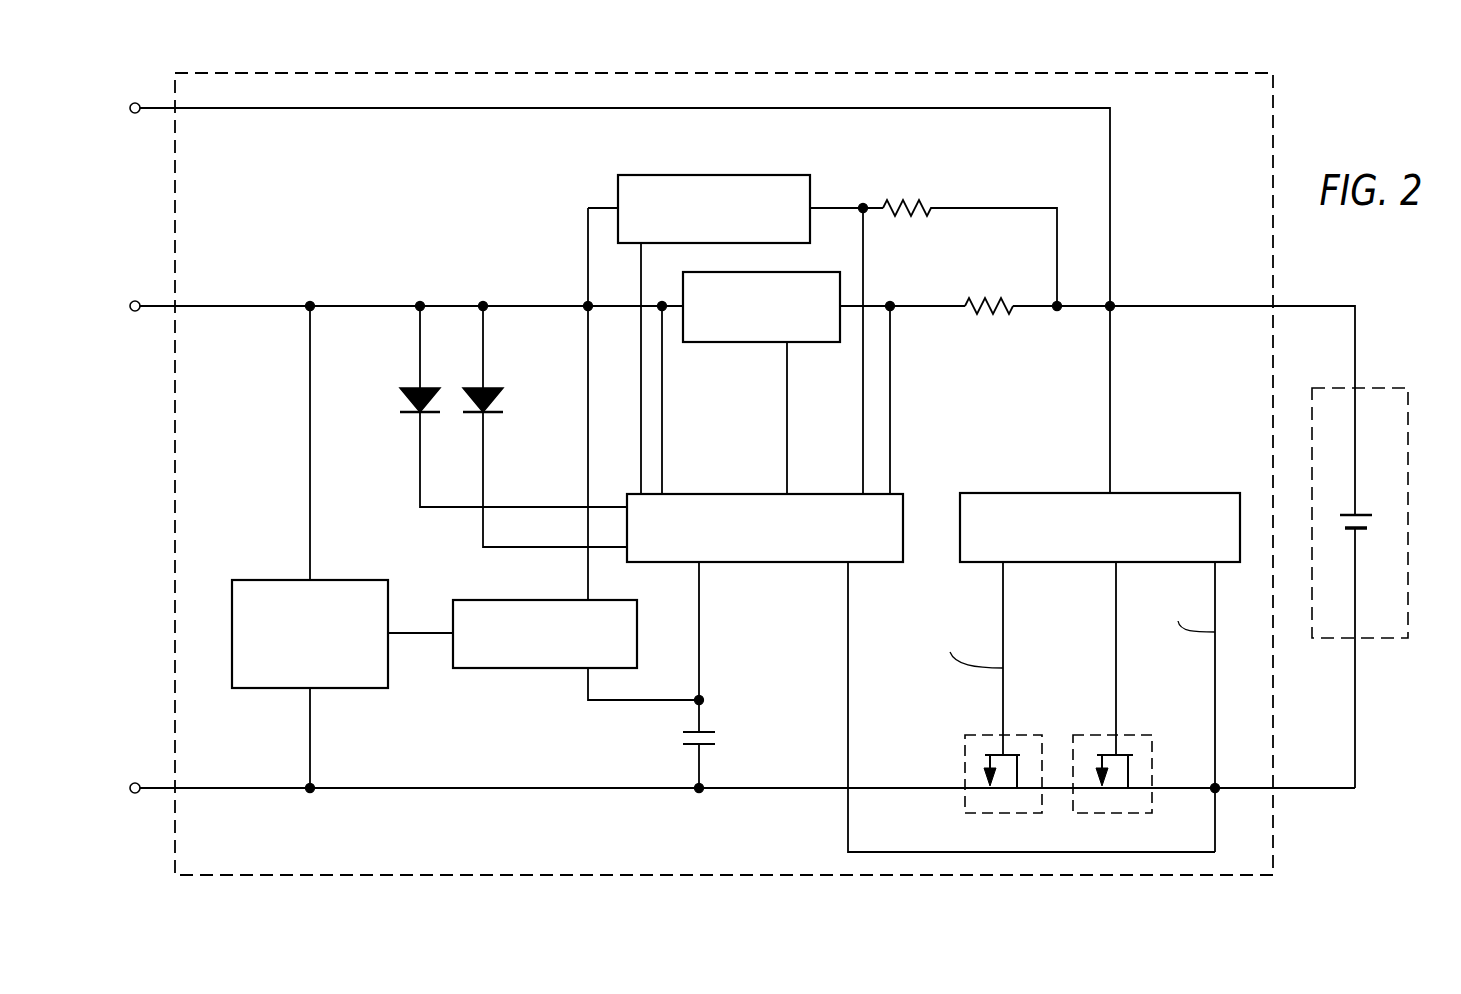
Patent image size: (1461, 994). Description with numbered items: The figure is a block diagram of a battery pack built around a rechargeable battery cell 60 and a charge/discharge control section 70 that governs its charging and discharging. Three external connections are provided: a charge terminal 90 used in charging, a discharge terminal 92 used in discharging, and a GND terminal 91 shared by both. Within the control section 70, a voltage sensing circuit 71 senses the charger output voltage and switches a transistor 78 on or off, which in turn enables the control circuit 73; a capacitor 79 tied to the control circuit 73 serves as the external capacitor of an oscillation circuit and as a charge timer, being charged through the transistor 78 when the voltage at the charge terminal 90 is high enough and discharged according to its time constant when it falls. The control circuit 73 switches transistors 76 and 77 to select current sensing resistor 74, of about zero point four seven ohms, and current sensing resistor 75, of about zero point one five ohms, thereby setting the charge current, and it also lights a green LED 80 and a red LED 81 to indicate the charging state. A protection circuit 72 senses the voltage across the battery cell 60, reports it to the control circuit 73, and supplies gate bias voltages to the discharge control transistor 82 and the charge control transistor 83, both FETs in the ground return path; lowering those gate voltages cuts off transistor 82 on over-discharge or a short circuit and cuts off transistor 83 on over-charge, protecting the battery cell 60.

The battery cell 60 is at (1409, 400).
The charge/discharge control section 70 is at (1273, 95).
The voltage sensing circuit 71 is at (258, 580).
The protection circuit 72 is at (1192, 493).
The control circuit 73 is at (712, 493).
The current sensing resistor 74 is at (916, 200).
The current sensing resistor 75 is at (988, 297).
The transistor 76 is at (778, 175).
The transistor 77 is at (803, 342).
The transistor 78 is at (497, 668).
The capacitor 79 is at (683, 737).
The LED 80 is at (489, 386).
The LED 81 is at (412, 386).
The discharge control transistor 82 is at (1150, 813).
The charge control transistor 83 is at (985, 813).
The charge terminal 90 is at (131, 303).
The GND terminal 91 is at (131, 785).
The discharge terminal 92 is at (131, 103).